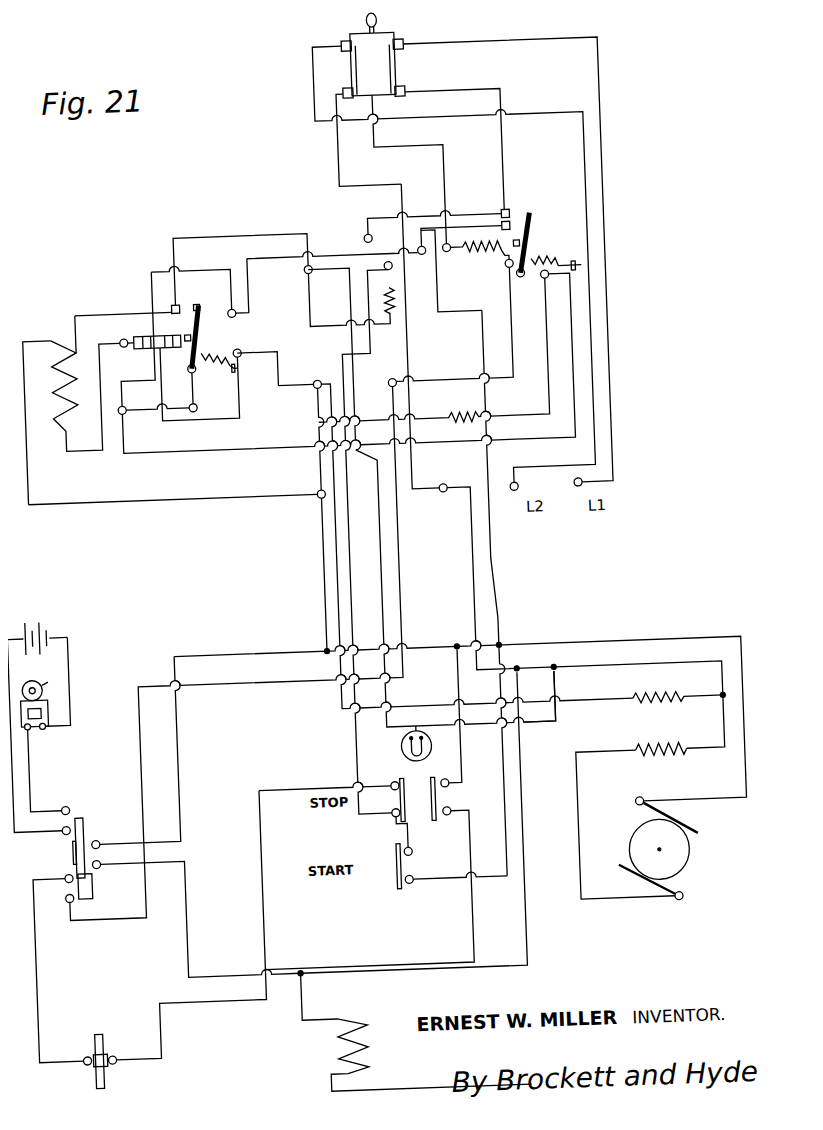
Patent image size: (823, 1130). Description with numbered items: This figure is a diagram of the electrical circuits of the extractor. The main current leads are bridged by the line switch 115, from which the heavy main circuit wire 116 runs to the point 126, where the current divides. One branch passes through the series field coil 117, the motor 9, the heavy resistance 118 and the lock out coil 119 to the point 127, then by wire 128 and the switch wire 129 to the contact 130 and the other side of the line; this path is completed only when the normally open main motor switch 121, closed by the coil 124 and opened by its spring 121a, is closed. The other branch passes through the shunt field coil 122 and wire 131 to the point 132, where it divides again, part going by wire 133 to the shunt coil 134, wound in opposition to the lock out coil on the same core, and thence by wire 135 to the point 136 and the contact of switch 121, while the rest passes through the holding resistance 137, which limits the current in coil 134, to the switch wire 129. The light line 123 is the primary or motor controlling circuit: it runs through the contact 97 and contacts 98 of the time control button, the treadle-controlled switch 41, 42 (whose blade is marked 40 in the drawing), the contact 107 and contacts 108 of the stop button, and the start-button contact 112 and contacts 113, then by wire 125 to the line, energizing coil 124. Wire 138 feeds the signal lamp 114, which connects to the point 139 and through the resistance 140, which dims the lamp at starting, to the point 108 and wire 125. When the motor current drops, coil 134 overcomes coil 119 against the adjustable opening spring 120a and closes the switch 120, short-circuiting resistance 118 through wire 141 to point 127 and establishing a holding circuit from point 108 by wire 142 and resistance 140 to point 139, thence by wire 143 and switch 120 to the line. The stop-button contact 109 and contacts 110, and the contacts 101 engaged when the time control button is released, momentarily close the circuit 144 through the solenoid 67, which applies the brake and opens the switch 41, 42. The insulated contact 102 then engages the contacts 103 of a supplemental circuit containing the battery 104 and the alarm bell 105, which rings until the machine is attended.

The motor 9 is at (680, 857).
The switch blade 40 is at (85, 1030).
The switch 41 is at (89, 1056).
The switch 42 is at (52, 1080).
The solenoid 67 is at (320, 1045).
The contact 97 is at (60, 889).
The contacts 98 is at (55, 869).
The contacts 101 is at (88, 828).
The insulated contact 102 is at (62, 838).
The contacts 103 is at (58, 793).
The battery 104 is at (47, 612).
The bell 105 is at (42, 698).
The contact 107 is at (395, 795).
The contacts 108 is at (368, 826).
The contact 109 is at (426, 800).
The contacts 110 is at (435, 835).
The contact 112 is at (385, 864).
The contacts 113 is at (401, 852).
The signal lamp 114 is at (411, 730).
The line switch 115 is at (421, 68).
The main circuit 116 is at (416, 345).
The field coil 117 is at (660, 763).
The heavy resistance 118 is at (68, 418).
The lock out coil 119 is at (150, 326).
The switch 120 is at (210, 330).
The opening spring 120a is at (228, 357).
The main motor circuit controlling switch 121 is at (543, 240).
The spring 121a is at (558, 282).
The shunt field coil 122 is at (640, 698).
The primary circuit 123 is at (459, 190).
The coil 124 is at (495, 262).
The wire 125 is at (497, 598).
The point 126 is at (719, 706).
The point 127 is at (127, 403).
The wire 128 is at (282, 442).
The switch wire 129 is at (555, 262).
The contact 130 is at (518, 205).
The wire 131 is at (322, 555).
The point 132 is at (321, 376).
The wire 133 is at (238, 412).
The shunt coil 134 is at (188, 296).
The wire 135 is at (372, 239).
The point 136 is at (512, 222).
The holding resistance 137 is at (468, 413).
The wire 138 is at (545, 728).
The point 139 is at (314, 269).
The resistance 140 is at (402, 308).
The wire 141 is at (96, 303).
The wire 142 is at (400, 560).
The wire 143 is at (250, 229).
The circuit 144 is at (512, 932).